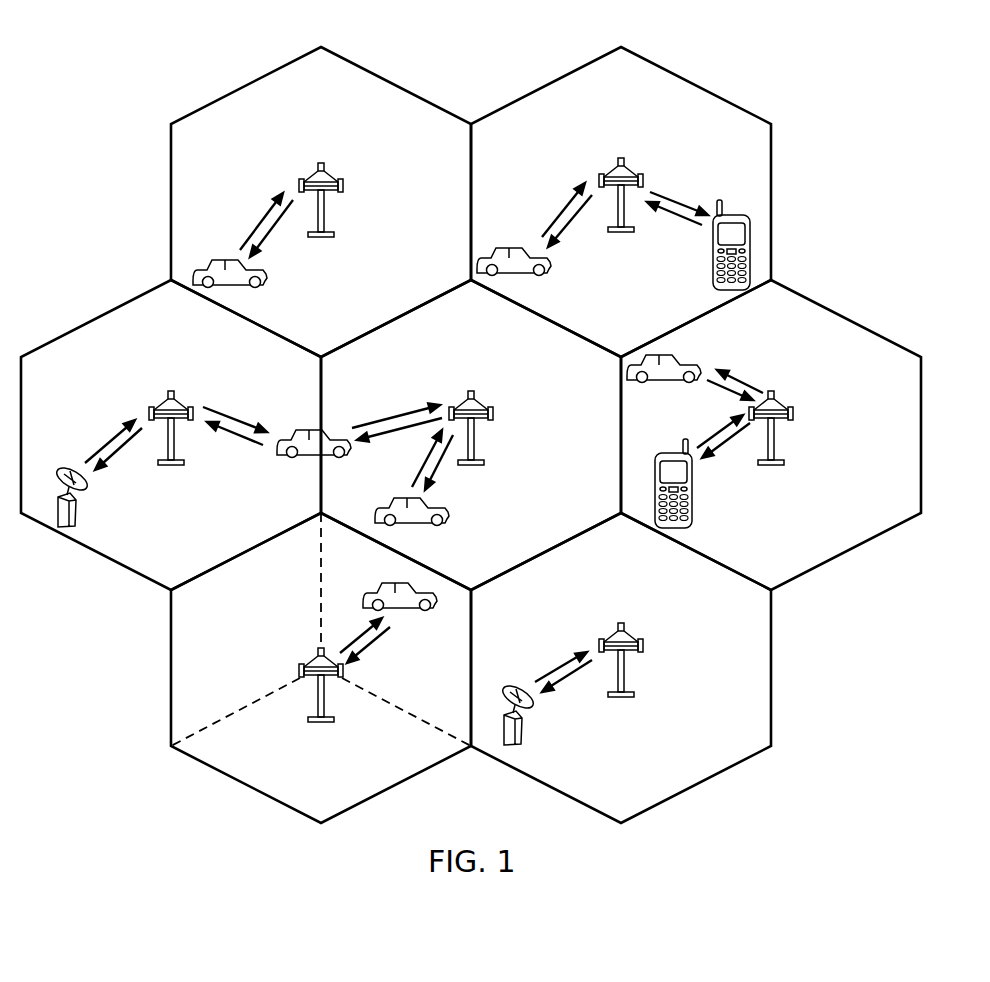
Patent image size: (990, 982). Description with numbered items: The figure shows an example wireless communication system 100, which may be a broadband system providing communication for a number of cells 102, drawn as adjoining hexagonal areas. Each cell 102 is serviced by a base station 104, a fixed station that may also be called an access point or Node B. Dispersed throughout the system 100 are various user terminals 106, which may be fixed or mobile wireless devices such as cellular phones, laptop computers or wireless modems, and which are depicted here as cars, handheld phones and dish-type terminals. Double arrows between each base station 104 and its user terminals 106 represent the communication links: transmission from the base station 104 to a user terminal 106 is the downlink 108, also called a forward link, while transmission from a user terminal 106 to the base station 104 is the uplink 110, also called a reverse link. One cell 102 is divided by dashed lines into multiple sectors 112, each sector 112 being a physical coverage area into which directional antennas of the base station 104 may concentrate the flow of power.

The wireless communication system 100 is at (910, 124).
The cell 102 is at (253, 81).
The base station 104 is at (321, 163).
The user terminal 106 is at (269, 284).
The downlink 108 is at (267, 234).
The uplink 110 is at (262, 223).
The sector 112 is at (373, 782).